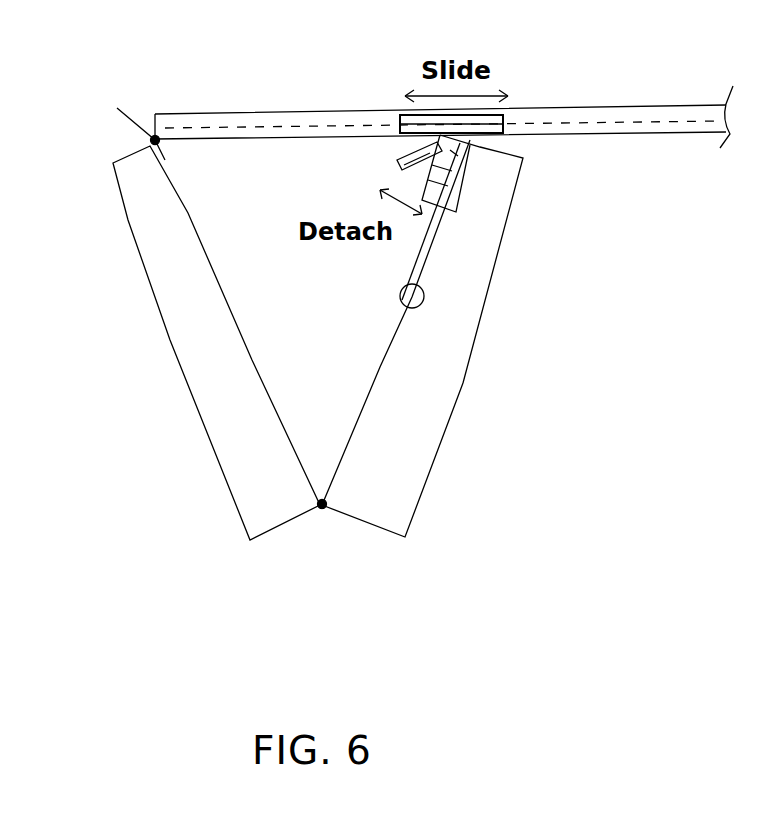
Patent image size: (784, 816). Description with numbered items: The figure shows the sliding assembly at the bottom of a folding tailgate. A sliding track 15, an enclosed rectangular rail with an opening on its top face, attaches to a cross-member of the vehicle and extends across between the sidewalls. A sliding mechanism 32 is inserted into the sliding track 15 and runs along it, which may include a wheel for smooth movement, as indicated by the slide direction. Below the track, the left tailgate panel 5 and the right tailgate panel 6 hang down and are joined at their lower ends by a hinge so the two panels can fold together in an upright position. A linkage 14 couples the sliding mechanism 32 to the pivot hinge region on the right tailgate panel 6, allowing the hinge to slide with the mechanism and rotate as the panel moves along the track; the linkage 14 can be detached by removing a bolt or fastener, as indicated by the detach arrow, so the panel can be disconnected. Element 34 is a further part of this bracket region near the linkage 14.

The sliding track 15 is at (278, 114).
The sliding mechanism 32 is at (486, 120).
The bracket 34 is at (443, 178).
The linkage 14 is at (388, 163).
The left tailgate panel 5 is at (180, 376).
The right tailgate panel 6 is at (470, 378).